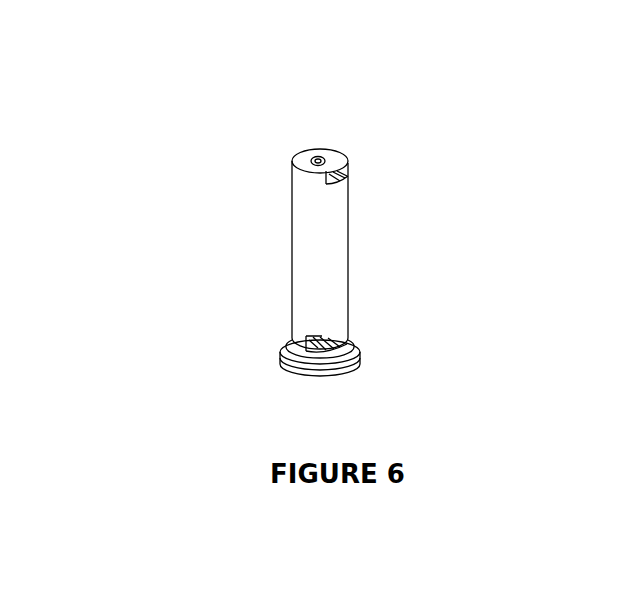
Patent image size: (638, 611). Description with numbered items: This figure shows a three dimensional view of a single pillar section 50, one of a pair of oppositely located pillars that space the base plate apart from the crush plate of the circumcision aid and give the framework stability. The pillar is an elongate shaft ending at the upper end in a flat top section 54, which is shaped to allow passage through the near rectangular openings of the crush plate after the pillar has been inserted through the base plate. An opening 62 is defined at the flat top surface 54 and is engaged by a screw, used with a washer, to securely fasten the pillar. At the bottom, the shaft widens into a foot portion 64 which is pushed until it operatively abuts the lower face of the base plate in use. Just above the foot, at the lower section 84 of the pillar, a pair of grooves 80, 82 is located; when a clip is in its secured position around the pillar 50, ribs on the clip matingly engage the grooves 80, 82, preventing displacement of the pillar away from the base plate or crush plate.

The pillar section 50 is at (176, 163).
The top section 54 is at (352, 163).
The opening 62 is at (316, 157).
The lower section 84 is at (290, 306).
The groove 82 is at (292, 335).
The groove 80 is at (345, 336).
The foot portion 64 is at (362, 370).